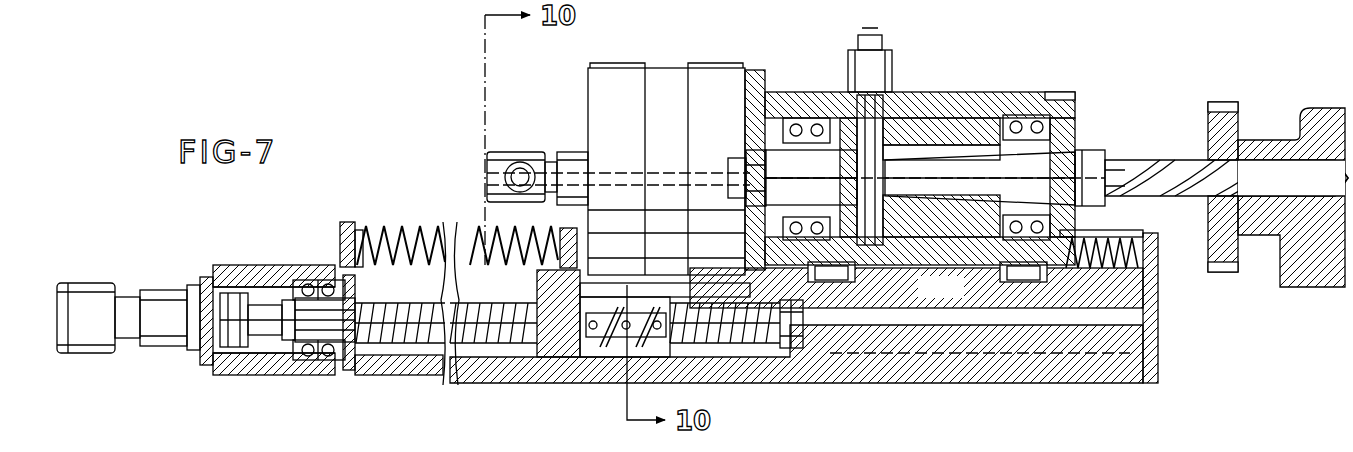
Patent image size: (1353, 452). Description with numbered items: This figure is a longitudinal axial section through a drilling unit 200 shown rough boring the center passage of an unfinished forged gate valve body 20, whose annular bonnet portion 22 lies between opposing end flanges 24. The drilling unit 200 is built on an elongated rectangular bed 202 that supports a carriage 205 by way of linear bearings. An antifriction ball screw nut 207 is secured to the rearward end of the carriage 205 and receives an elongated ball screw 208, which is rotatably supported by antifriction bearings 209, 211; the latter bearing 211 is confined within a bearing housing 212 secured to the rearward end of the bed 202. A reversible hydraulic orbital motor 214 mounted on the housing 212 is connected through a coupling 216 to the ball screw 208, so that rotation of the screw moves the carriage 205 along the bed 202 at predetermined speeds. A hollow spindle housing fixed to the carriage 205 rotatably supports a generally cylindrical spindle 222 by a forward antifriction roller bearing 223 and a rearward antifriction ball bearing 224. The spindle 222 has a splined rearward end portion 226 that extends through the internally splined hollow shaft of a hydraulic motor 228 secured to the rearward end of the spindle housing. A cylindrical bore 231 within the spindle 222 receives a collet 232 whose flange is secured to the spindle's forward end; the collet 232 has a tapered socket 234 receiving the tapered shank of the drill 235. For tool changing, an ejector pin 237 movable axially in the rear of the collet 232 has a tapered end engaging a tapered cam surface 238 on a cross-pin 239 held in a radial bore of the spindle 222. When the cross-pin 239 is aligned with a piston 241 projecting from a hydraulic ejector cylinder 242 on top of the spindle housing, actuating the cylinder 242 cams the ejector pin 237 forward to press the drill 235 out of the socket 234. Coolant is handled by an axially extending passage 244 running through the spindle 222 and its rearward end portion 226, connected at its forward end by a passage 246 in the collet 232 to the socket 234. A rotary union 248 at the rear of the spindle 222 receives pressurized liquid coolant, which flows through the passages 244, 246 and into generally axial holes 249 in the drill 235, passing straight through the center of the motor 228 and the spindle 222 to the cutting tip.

The valve body 20 is at (1276, 188).
The bonnet portion 22 is at (1318, 275).
The end flanges 24 is at (1226, 102).
The drilling unit 200 is at (935, 145).
The bed 202 is at (938, 380).
The carriage 205 is at (1138, 290).
The ball screw nut 207 is at (604, 350).
The ball screw 208 is at (428, 303).
The antifriction bearing 209 is at (790, 350).
The antifriction bearing 211 is at (318, 362).
The bearing housing 212 is at (256, 265).
The hydraulic orbital motor 214 is at (100, 285).
The coupling 216 is at (252, 335).
The spindle 222 is at (905, 118).
The forward antifriction roller bearing 223 is at (1023, 115).
The rearward antifriction ball bearing 224 is at (812, 117).
The splined rearward end portion 226 is at (750, 190).
The hydraulic motor 228 is at (672, 70).
The cylindrical bore 231 is at (958, 270).
The collet 232 is at (1008, 208).
The tapered socket 234 is at (988, 118).
The drill 235 is at (1157, 160).
The ejector pin 237 is at (953, 198).
The tapered cam surface 238 is at (842, 188).
The cross-pin 239 is at (842, 165).
The piston 241 is at (860, 118).
The hydraulic ejector cylinder 242 is at (892, 62).
The axially extending passage 244 is at (745, 157).
The passage 246 is at (953, 158).
The rotary union 248 is at (535, 152).
The holes 249 is at (1343, 198).